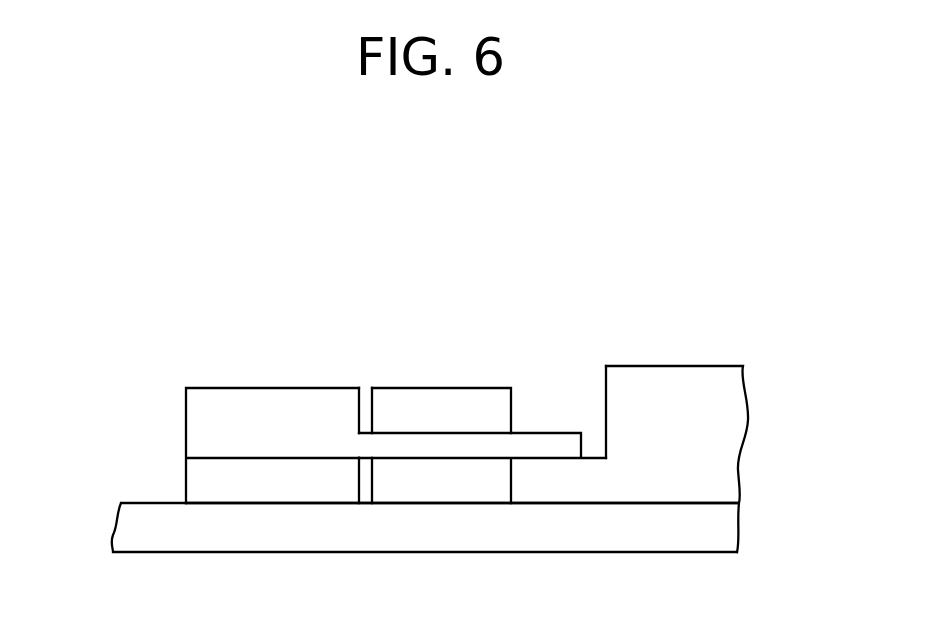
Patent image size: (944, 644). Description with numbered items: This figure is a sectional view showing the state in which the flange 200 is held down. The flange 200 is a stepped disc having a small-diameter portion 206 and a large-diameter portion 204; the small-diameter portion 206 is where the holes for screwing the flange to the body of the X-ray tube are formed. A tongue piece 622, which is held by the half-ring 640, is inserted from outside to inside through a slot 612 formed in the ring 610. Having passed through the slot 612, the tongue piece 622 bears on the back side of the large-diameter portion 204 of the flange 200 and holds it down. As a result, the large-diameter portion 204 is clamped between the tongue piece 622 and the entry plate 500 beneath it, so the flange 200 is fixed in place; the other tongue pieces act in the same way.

The flange 200 is at (718, 427).
The large-diameter portion 204 is at (535, 492).
The small-diameter portion 206 is at (606, 392).
The entry plate 500 is at (723, 536).
The ring 610 is at (442, 400).
The slot 612 is at (381, 433).
The tongue piece 622 is at (526, 444).
The half-ring 640 is at (198, 477).